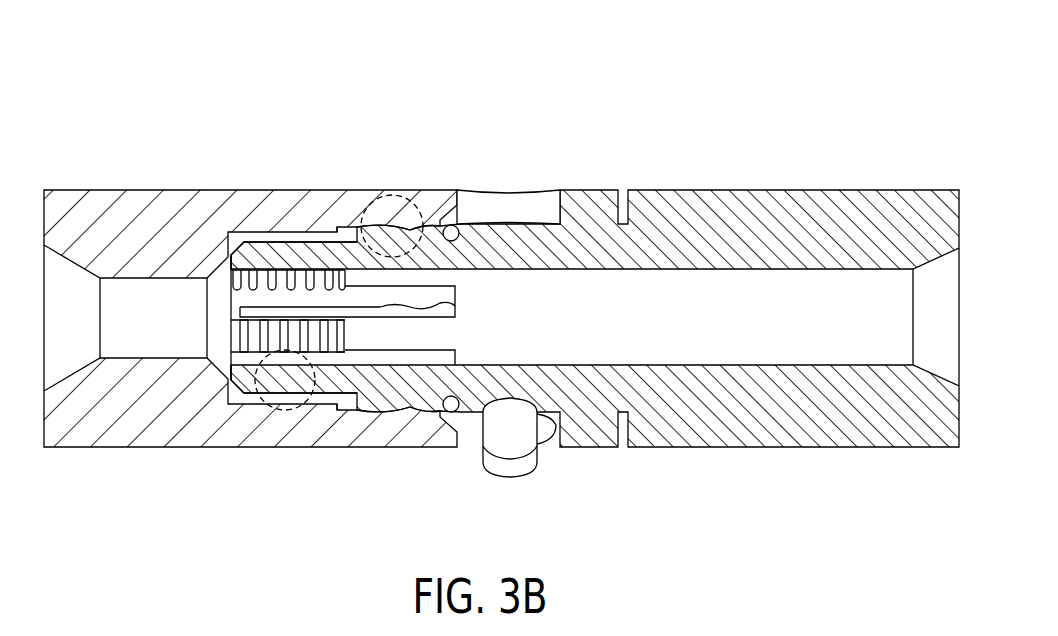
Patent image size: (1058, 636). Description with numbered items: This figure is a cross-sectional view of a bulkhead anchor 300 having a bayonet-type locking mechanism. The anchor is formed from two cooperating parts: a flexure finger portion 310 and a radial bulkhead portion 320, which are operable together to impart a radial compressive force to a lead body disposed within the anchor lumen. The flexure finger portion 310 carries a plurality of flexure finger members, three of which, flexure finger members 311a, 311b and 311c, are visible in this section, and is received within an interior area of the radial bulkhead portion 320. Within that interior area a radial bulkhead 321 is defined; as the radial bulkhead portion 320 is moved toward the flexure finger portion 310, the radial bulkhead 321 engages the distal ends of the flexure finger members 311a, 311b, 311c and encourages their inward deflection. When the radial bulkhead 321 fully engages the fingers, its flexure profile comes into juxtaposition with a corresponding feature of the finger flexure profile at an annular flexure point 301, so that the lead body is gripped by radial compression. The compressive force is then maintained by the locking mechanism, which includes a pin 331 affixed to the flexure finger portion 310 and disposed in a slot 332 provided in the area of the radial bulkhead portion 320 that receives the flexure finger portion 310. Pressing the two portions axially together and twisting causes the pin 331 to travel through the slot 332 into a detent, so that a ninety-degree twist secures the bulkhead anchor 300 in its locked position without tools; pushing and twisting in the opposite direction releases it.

The bulkhead anchor 300 is at (786, 113).
The annular flexure point 301 is at (372, 205).
The flexure finger portion 310 is at (592, 328).
The flexure finger member 311a is at (290, 407).
The flexure finger member 311b is at (358, 343).
The flexure finger member 311c is at (278, 250).
The radial bulkhead portion 320 is at (88, 449).
The radial bulkhead 321 is at (348, 412).
The pin 331 is at (526, 470).
The slot 332 is at (458, 414).